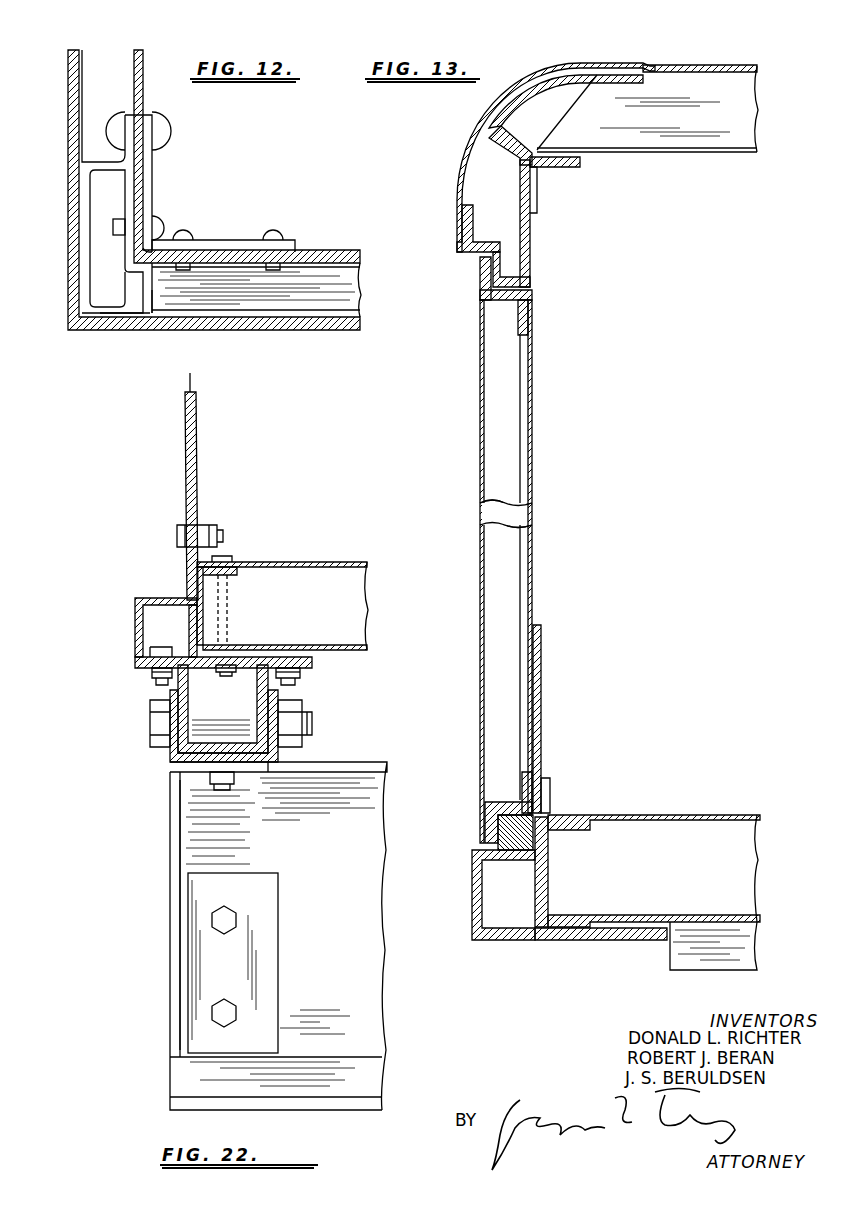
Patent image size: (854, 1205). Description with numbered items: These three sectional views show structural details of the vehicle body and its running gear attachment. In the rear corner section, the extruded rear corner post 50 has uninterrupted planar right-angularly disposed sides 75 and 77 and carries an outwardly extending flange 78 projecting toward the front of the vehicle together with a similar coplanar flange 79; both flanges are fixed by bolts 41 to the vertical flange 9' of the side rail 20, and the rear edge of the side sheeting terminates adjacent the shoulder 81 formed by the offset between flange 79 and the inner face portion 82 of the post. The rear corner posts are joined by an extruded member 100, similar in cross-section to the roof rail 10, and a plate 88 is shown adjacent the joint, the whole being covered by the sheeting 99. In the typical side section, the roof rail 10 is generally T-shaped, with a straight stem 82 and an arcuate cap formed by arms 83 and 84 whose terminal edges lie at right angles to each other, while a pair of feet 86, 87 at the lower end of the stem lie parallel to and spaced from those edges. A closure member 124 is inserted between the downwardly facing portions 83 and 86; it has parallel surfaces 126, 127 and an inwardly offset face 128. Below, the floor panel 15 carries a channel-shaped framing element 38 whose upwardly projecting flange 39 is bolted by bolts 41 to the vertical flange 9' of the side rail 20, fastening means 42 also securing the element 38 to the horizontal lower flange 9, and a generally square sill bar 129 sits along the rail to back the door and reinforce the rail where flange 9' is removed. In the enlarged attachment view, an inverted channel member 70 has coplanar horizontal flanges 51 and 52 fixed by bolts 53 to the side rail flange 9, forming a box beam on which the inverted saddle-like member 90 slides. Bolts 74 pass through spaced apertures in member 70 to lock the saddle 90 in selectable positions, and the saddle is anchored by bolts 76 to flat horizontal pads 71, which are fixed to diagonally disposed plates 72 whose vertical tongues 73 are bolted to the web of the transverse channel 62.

In FIG. 22, the horizontal lower flange 9 is at (241, 672).
In FIG. 13, the horizontal lower flange 9 is at (601, 959).
In FIG. 22, the vertical flange 9' is at (206, 486).
In FIG. 13, the vertical flange 9' is at (556, 719).
In FIG. 12, the roof rail 10 is at (150, 78).
In FIG. 13, the roof rail 10 is at (546, 182).
In FIG. 22, the panel 15 is at (284, 580).
In FIG. 13, the panel 15 is at (647, 882).
In FIG. 22, the side rail 20 is at (128, 628).
In FIG. 13, the side rail 20 is at (466, 905).
In FIG. 22, the framing element 38 is at (212, 590).
In FIG. 13, the framing element 38 is at (556, 857).
In FIG. 22, the outwardly projecting flange 39 is at (207, 558).
In FIG. 13, the outwardly projecting flange 39 is at (551, 801).
In FIG. 22, the bolt 41 is at (207, 529).
In FIG. 22, the fastening means 42 is at (233, 560).
In FIG. 12, the rear corner post 50 is at (189, 206).
In FIG. 22, the horizontal flange 51 is at (300, 668).
In FIG. 22, the horizontal flange 52 is at (140, 670).
In FIG. 22, the bolt 53 is at (158, 684).
In FIG. 22, the transverse channel 62 is at (328, 873).
In FIG. 22, the channel-shaped structural member 70 is at (194, 690).
In FIG. 22, the horizontal pad 71 is at (266, 775).
In FIG. 22, the diagonally disposed plate 72 is at (176, 866).
In FIG. 22, the tongue 73 is at (231, 960).
In FIG. 22, the bolt 74 is at (150, 735).
In FIG. 12, the planar side 75 is at (120, 318).
In FIG. 22, the bolt 76 is at (225, 792).
In FIG. 12, the planar side 77 is at (70, 230).
In FIG. 12, the outwardly extending flange 78 is at (134, 141).
In FIG. 12, the flange 79 is at (140, 250).
In FIG. 12, the shoulder 81 is at (150, 258).
In FIG. 12, the inner face portion 82 is at (163, 310).
In FIG. 13, the inner face portion 82 is at (512, 150).
In FIG. 13, the arcuate arm 83 is at (458, 184).
In FIG. 13, the arcuate arm 84 is at (532, 146).
In FIG. 13, the foot 86 is at (537, 206).
In FIG. 13, the foot 87 is at (577, 170).
In FIG. 12, the plate 88 is at (246, 240).
In FIG. 22, the saddle-like member 90 is at (163, 757).
In FIG. 12, the sheeting 99 is at (68, 112).
In FIG. 12, the extruded member 100 is at (333, 303).
In FIG. 13, the closure member 124 is at (549, 228).
In FIG. 13, the parallel surface 126 is at (533, 245).
In FIG. 13, the parallel surface 127 is at (468, 240).
In FIG. 13, the inwardly offset face 128 is at (491, 280).
In FIG. 13, the sill member 129 is at (505, 846).